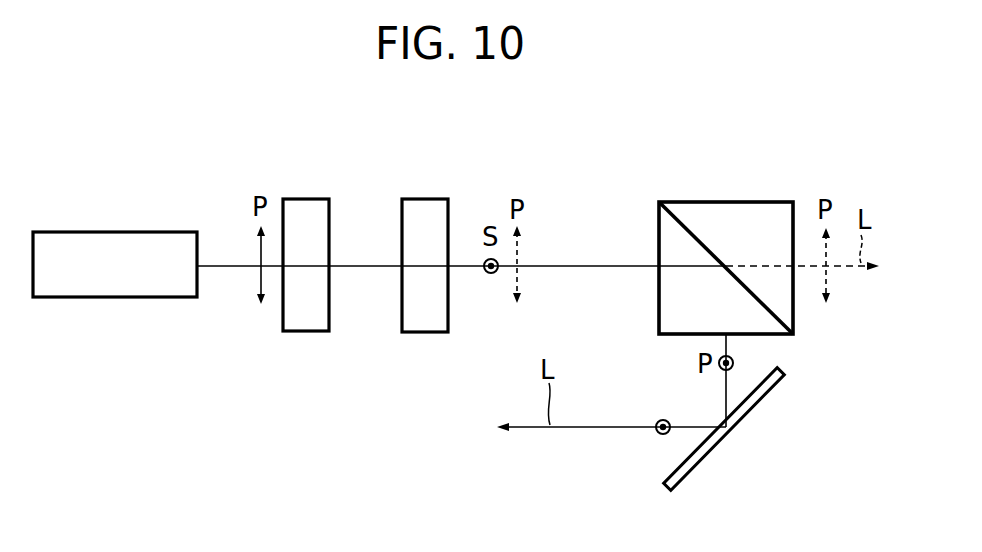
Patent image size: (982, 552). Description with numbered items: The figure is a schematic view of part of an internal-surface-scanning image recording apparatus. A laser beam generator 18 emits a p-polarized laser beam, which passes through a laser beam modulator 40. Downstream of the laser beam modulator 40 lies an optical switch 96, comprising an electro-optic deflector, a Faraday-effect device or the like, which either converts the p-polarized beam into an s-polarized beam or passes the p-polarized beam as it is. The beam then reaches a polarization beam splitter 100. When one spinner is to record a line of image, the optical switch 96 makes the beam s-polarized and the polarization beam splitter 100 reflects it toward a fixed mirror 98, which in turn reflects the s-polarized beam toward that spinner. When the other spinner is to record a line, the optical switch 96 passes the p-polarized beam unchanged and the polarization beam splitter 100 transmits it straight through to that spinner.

The laser beam generator 18 is at (115, 247).
The laser beam modulator 40 is at (305, 218).
The optical switch 96 is at (428, 227).
The polarization beam splitter 100 is at (733, 217).
The fixed mirror 98 is at (698, 458).